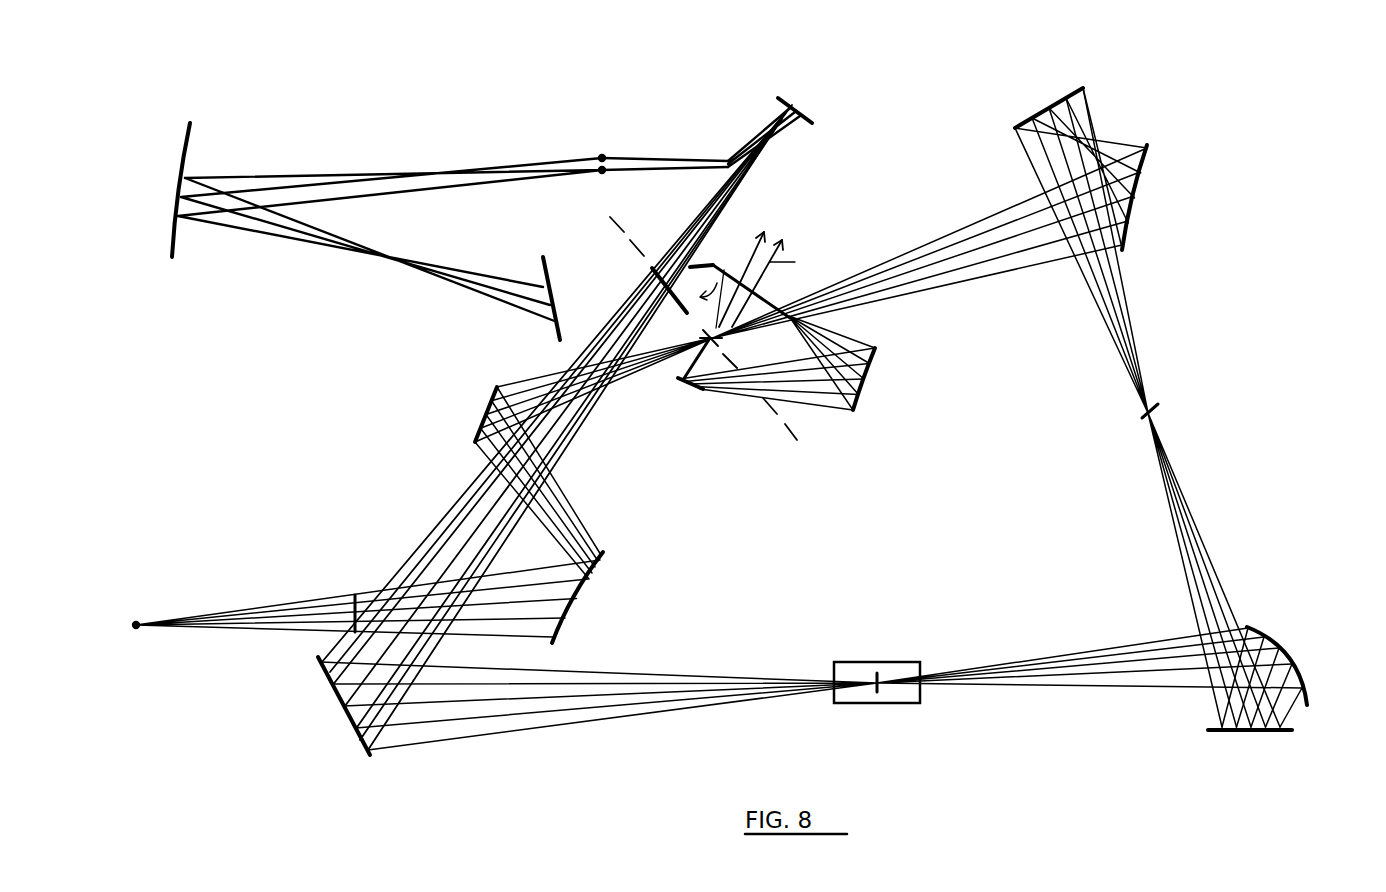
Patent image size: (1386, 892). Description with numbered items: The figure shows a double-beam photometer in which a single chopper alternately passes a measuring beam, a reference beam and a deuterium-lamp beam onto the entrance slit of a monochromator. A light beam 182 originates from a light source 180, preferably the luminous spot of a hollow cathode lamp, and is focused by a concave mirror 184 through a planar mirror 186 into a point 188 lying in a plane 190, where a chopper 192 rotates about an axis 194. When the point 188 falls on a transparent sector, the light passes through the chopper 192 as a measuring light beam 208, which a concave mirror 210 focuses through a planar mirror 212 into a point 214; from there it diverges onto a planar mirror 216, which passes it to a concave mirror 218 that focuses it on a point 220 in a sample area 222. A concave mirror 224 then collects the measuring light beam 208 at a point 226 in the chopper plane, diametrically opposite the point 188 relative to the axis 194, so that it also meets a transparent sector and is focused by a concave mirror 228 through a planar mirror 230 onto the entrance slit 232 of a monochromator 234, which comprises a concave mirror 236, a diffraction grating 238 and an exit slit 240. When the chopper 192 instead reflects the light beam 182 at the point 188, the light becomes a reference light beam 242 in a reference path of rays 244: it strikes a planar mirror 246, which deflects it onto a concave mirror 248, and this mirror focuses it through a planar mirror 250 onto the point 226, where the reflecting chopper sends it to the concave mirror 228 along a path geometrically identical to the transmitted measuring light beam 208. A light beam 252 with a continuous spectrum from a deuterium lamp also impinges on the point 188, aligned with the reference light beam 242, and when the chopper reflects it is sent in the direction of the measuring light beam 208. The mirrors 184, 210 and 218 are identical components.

The light source 180 is at (136, 627).
The light beam 182 is at (288, 615).
The concave mirror 184 is at (566, 630).
The planar mirror 186 is at (470, 425).
The point 188 is at (705, 338).
The plane 190 is at (644, 195).
The chopper 192 is at (653, 274).
The axis 194 is at (724, 270).
The measuring light beam 208 is at (935, 268).
The concave mirror 210 is at (1133, 208).
The planar mirror 212 is at (1057, 103).
The point 214 is at (1155, 410).
The planar mirror 216 is at (1240, 733).
The concave mirror 218 is at (1270, 645).
The point 220 is at (880, 680).
The sample area 222 is at (830, 665).
The concave mirror 224 is at (350, 727).
The point 226 is at (653, 284).
The concave mirror 228 is at (792, 101).
The planar mirror 230 is at (750, 188).
The entrance slit 232 is at (606, 167).
The monochromator 234 is at (435, 218).
The concave mirror 236 is at (173, 243).
The diffraction grating 238 is at (546, 258).
The exit slit 240 is at (607, 153).
The reference light beam 242 is at (708, 392).
The reference path of rays 244 is at (836, 424).
The planar mirror 246 is at (690, 390).
The concave mirror 248 is at (868, 380).
The planar mirror 250 is at (700, 264).
The light beam 252 is at (770, 262).